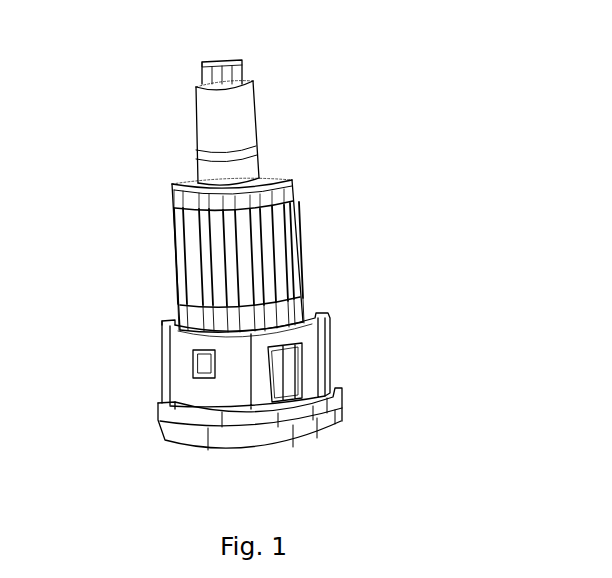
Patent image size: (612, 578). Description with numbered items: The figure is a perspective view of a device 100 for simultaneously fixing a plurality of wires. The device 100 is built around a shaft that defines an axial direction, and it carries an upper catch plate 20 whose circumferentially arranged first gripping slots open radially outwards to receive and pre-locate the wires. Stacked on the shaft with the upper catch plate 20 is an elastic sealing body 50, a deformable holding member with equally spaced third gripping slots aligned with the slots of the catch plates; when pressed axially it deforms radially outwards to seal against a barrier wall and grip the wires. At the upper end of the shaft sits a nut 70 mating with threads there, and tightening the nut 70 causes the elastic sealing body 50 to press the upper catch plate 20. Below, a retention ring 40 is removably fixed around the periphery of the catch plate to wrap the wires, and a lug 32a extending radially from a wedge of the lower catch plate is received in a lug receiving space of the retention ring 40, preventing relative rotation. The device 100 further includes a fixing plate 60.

The device 100 is at (244, 276).
The nut 70 is at (238, 117).
The upper catch plate 20 is at (247, 177).
The elastic sealing body 50 is at (270, 248).
The fixing plate 60 is at (283, 310).
The retention ring 40 is at (305, 338).
The lug 32a is at (205, 367).